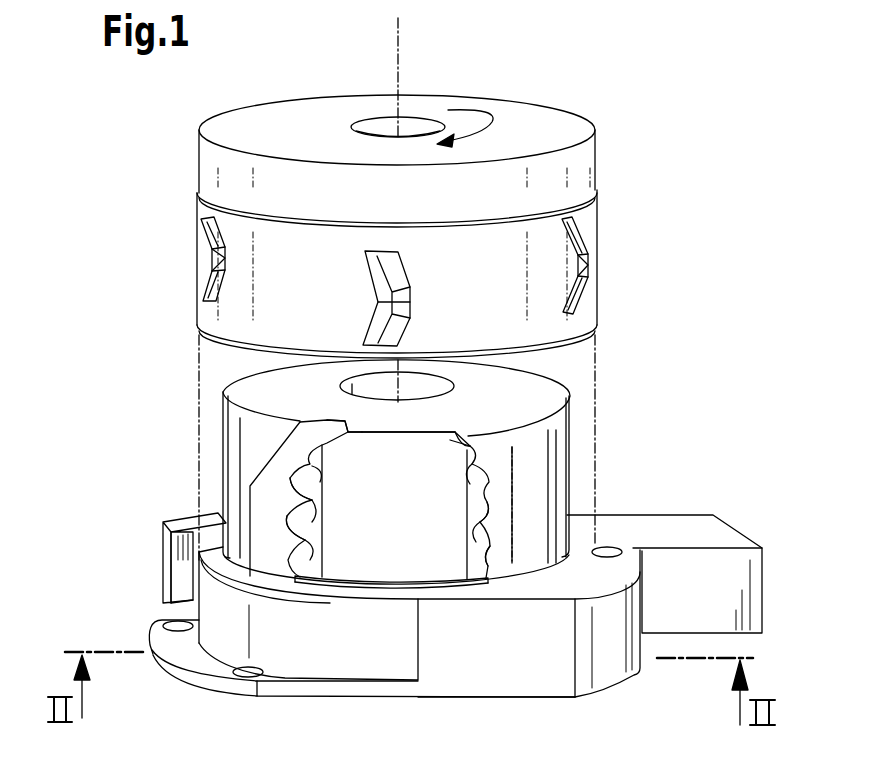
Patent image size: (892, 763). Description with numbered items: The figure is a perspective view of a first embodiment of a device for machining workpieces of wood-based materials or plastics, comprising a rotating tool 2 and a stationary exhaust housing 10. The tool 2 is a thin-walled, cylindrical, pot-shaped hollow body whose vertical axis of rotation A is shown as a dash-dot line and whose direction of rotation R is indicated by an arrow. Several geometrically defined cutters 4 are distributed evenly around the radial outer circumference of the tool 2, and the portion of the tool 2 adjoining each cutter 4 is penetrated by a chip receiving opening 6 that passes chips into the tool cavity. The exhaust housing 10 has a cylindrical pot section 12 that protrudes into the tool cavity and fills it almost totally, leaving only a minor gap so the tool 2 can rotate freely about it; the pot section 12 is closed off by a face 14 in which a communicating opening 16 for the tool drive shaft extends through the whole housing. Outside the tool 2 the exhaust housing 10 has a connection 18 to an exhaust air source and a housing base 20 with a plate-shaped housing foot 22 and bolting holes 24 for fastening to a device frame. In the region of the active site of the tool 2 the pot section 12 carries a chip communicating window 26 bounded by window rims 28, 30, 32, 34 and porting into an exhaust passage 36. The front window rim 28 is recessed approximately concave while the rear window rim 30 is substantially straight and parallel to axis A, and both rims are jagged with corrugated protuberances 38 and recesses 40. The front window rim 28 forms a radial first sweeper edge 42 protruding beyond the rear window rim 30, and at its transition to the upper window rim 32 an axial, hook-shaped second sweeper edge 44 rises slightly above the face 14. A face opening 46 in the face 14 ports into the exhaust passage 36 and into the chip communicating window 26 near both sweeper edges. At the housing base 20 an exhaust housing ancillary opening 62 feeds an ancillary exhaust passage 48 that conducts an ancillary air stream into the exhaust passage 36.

The tool 2 is at (613, 203).
The cutters 4 is at (205, 230).
The chip receiving opening 6 is at (215, 262).
The exhaust housing 10 is at (472, 660).
The pot section 12 is at (568, 422).
The face 14 is at (537, 376).
The communicating opening 16 is at (362, 383).
The connection 18 is at (720, 535).
The housing base 20 is at (612, 668).
The housing foot 22 is at (298, 688).
The bolting holes 24 is at (240, 673).
The chip communicating window 26 is at (298, 518).
The front window rim 28 is at (325, 490).
The rear window rim 30 is at (470, 488).
The upper window rim 32 is at (470, 450).
The window rim 34 is at (385, 578).
The exhaust passage 36 is at (300, 490).
The protuberances 38 is at (476, 522).
The recesses 40 is at (302, 535).
The first sweeper edge 42 is at (298, 455).
The second sweeper edge 44 is at (348, 420).
The face opening 46 is at (412, 431).
The ancillary exhaust passage 48 is at (193, 585).
The exhaust housing ancillary opening 62 is at (172, 558).
The axis of rotation A is at (404, 51).
The direction of rotation R is at (490, 118).